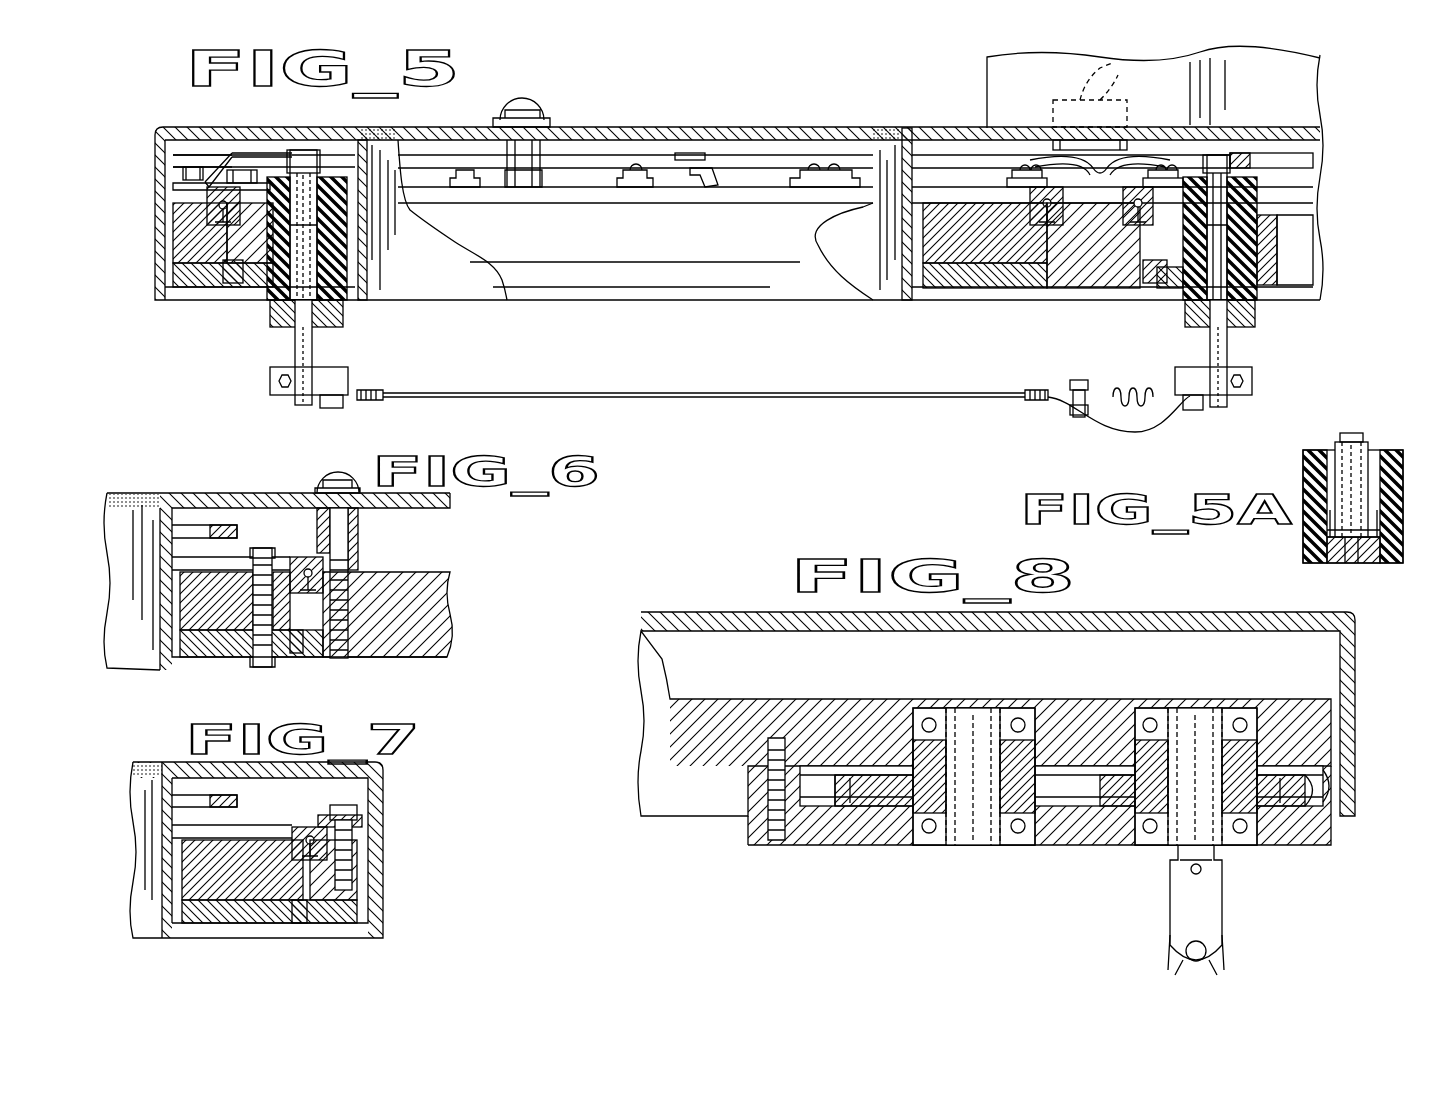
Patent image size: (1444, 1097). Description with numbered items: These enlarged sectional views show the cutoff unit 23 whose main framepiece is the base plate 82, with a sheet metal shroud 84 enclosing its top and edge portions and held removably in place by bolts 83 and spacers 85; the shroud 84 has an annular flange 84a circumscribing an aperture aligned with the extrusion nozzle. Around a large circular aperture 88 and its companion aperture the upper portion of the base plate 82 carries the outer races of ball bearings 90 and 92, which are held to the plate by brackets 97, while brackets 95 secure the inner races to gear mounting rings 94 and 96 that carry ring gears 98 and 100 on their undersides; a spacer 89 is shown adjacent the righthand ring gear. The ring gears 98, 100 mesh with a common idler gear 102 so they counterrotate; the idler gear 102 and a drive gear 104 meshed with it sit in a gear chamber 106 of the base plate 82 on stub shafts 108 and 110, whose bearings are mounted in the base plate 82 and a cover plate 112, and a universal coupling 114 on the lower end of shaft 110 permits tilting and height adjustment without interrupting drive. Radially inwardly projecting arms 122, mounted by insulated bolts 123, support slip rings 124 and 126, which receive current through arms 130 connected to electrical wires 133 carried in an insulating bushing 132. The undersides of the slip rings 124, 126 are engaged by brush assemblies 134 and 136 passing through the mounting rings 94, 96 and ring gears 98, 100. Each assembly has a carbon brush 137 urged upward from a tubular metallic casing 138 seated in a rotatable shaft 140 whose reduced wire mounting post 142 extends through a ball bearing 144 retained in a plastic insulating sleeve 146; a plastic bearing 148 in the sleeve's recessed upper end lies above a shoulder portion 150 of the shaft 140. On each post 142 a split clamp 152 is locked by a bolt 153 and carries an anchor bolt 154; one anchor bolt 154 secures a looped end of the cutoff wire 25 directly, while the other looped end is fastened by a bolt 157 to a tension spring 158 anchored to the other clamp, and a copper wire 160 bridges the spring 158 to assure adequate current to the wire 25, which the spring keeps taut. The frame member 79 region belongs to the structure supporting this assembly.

In FIG. 5, the cutoff unit 23 is at (163, 126).
In FIG. 5, the cutoff wire 25 is at (738, 393).
In FIG. 5, the frame member 79 is at (987, 73).
In FIG. 5, the base plate 82 is at (200, 263).
In FIG. 6, the base plate 82 is at (447, 583).
In FIG. 7, the base plate 82 is at (357, 897).
In FIG. 8, the base plate 82 is at (675, 748).
In FIG. 5, the bolts 83 is at (522, 98).
In FIG. 6, the bolts 83 is at (340, 537).
In FIG. 5, the shroud 84 is at (188, 135).
In FIG. 6, the shroud 84 is at (440, 508).
In FIG. 7, the shroud 84 is at (380, 770).
In FIG. 8, the shroud 84 is at (698, 612).
In FIG. 5, the annular flange 84a is at (487, 286).
In FIG. 6, the annular flange 84a is at (172, 665).
In FIG. 7, the annular flange 84a is at (170, 935).
In FIG. 5, the spacers 85 is at (507, 155).
In FIG. 6, the spacers 85 is at (358, 516).
In FIG. 5, the circular aperture 88 is at (233, 283).
In FIG. 6, the circular aperture 88 is at (295, 653).
In FIG. 7, the circular aperture 88 is at (300, 923).
In FIG. 5, the spacer 89 is at (1150, 283).
In FIG. 5, the ball bearing 90 is at (207, 212).
In FIG. 6, the ball bearing 90 is at (323, 557).
In FIG. 7, the ball bearing 90 is at (305, 830).
In FIG. 5, the ball bearing 92 is at (1123, 196).
In FIG. 5, the gear mounting ring 94 is at (180, 240).
In FIG. 6, the gear mounting ring 94 is at (185, 613).
In FIG. 7, the gear mounting ring 94 is at (190, 872).
In FIG. 5, the brackets 95 is at (470, 203).
In FIG. 6, the brackets 95 is at (296, 548).
In FIG. 5, the gear mounting ring 96 is at (1302, 250).
In FIG. 5, the brackets 97 is at (227, 195).
In FIG. 7, the brackets 97 is at (362, 823).
In FIG. 5, the ring gear 98 is at (247, 287).
In FIG. 6, the ring gear 98 is at (243, 657).
In FIG. 7, the ring gear 98 is at (248, 923).
In FIG. 5, the ring gear 100 is at (1170, 288).
In FIG. 8, the idler gear 102 is at (860, 806).
In FIG. 8, the drive gear 104 is at (1270, 806).
In FIG. 8, the gear chamber 106 is at (1323, 768).
In FIG. 8, the stub shaft 108 is at (975, 708).
In FIG. 8, the stub shaft 110 is at (1192, 708).
In FIG. 8, the cover plate 112 is at (1058, 845).
In FIG. 8, the universal coupling 114 is at (1172, 914).
In FIG. 5, the arms 122 is at (200, 155).
In FIG. 5, the bolts 123 is at (183, 172).
In FIG. 5, the slip ring 124 is at (745, 155).
In FIG. 6, the slip ring 124 is at (217, 525).
In FIG. 7, the slip ring 124 is at (237, 797).
In FIG. 5, the slip ring 126 is at (1245, 155).
In FIG. 5, the arms 130 is at (1085, 170).
In FIG. 5, the insulating bushing 132 is at (1115, 148).
In FIG. 5, the electrical wires 133 is at (1068, 150).
In FIG. 5, the brush assembly 134 is at (340, 252).
In FIG. 5A, the brush assembly 134 is at (1312, 440).
In FIG. 5, the brush assembly 136 is at (1245, 200).
In FIG. 5, the carbon brush 137 is at (290, 160).
In FIG. 5A, the carbon brush 137 is at (1352, 433).
In FIG. 5, the tubular metallic casing 138 is at (318, 158).
In FIG. 5A, the tubular metallic casing 138 is at (1366, 448).
In FIG. 5A, the shaft 140 is at (1340, 563).
In FIG. 5, the wire mounting post 142 is at (312, 343).
In FIG. 5, the ball bearing 144 is at (343, 318).
In FIG. 5, the insulating sleeve 146 is at (340, 265).
In FIG. 5A, the insulating sleeve 146 is at (1310, 557).
In FIG. 5A, the plastic bearing 148 is at (1303, 460).
In FIG. 5A, the shoulder portion 150 is at (1328, 525).
In FIG. 5, the split clamp 152 is at (270, 387).
In FIG. 5, the bolt 153 is at (270, 371).
In FIG. 5, the anchor bolt 154 is at (335, 408).
In FIG. 5, the bolt 157 is at (1075, 380).
In FIG. 5, the tension spring 158 is at (1135, 387).
In FIG. 5, the copper wire 160 is at (1130, 435).